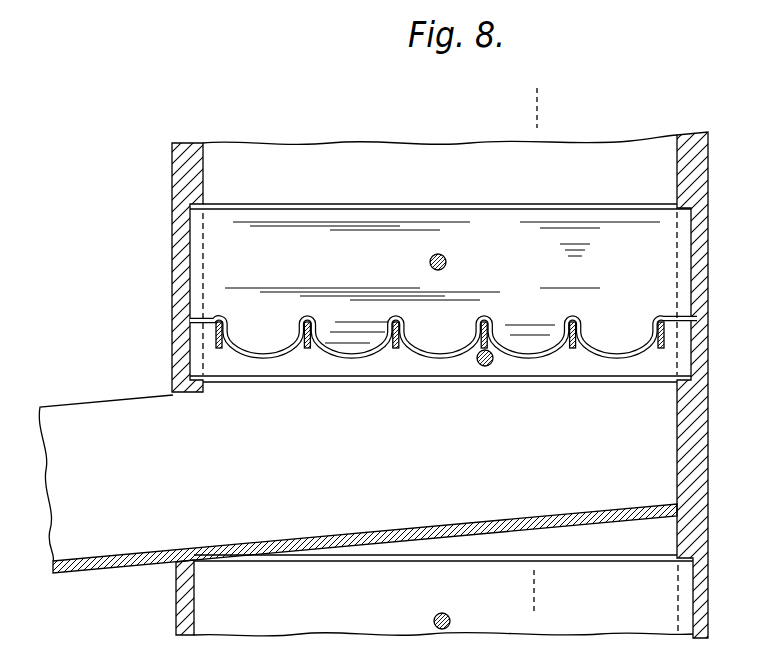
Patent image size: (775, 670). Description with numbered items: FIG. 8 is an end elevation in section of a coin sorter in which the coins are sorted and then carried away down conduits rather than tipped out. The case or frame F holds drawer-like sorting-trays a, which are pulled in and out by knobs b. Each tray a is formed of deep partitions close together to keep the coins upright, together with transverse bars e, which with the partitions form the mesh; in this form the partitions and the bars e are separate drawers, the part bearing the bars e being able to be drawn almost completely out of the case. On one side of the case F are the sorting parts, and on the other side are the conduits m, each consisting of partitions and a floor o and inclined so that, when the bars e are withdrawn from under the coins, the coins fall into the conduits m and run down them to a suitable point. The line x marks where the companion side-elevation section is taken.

The case or frame F is at (445, 386).
The sorting-tray a is at (441, 385).
The transverse bars e is at (220, 349).
The knobs b is at (446, 259).
The conduits m is at (336, 478).
The floor o is at (192, 548).
The section line x is at (440, 352).